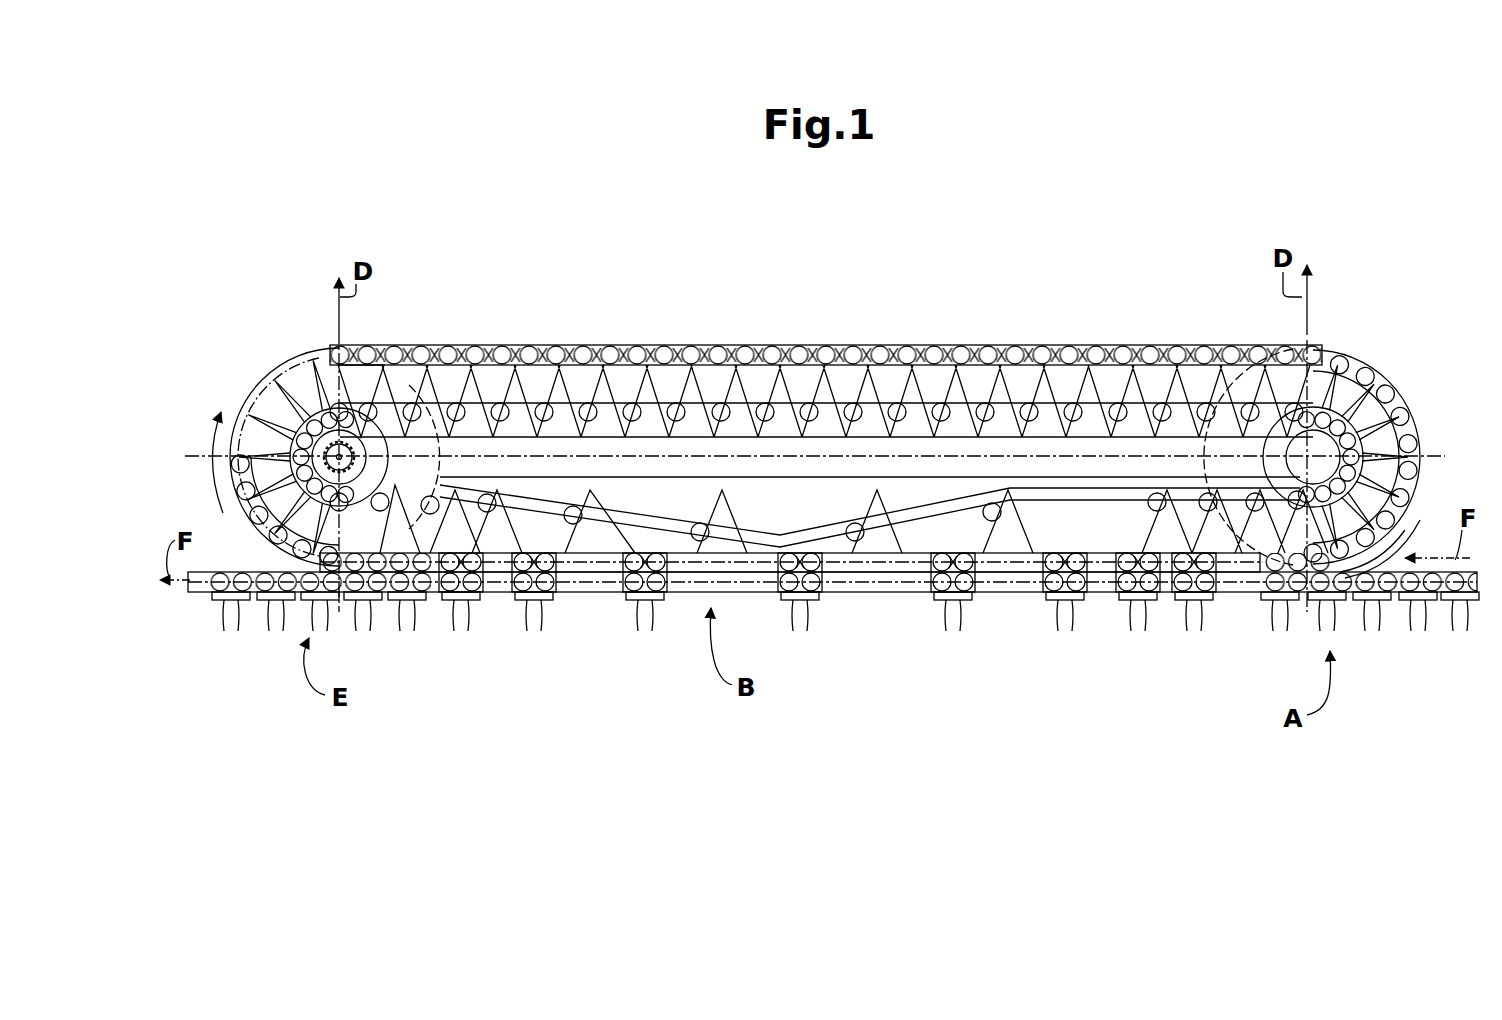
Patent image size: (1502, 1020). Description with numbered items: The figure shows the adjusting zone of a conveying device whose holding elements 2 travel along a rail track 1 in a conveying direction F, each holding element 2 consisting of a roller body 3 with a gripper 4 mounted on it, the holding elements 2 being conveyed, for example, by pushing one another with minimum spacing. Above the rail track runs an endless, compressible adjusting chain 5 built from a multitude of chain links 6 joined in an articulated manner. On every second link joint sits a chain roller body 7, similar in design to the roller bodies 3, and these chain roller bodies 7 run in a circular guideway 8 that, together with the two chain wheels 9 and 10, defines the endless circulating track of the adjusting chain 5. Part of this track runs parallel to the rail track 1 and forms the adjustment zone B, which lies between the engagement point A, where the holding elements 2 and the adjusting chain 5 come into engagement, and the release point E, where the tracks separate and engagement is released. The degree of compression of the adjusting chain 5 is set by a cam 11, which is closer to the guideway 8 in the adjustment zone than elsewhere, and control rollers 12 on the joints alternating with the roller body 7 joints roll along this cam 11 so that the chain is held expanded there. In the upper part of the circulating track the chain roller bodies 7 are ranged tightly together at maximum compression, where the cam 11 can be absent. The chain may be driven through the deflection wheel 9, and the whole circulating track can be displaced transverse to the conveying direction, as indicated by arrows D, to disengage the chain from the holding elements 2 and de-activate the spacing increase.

The rail track 1 is at (1240, 586).
The holding element 2 is at (1478, 616).
The roller body 3 is at (1370, 568).
The gripper 4 is at (1410, 622).
The adjusting chain 5 is at (625, 334).
The chain link 6 is at (544, 362).
The chain roller body 7 is at (866, 348).
The circular guideway 8 is at (263, 360).
The chain wheel 9 is at (316, 328).
The chain wheel 10 is at (1338, 333).
The cam 11 is at (605, 414).
The control roller 12 is at (975, 510).